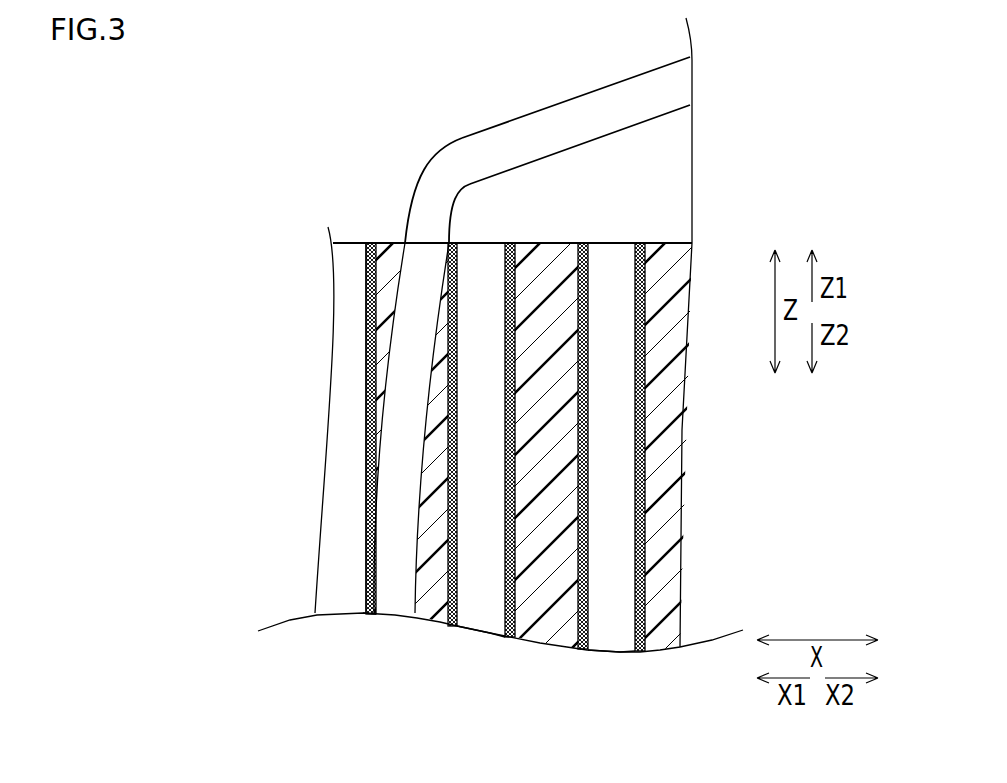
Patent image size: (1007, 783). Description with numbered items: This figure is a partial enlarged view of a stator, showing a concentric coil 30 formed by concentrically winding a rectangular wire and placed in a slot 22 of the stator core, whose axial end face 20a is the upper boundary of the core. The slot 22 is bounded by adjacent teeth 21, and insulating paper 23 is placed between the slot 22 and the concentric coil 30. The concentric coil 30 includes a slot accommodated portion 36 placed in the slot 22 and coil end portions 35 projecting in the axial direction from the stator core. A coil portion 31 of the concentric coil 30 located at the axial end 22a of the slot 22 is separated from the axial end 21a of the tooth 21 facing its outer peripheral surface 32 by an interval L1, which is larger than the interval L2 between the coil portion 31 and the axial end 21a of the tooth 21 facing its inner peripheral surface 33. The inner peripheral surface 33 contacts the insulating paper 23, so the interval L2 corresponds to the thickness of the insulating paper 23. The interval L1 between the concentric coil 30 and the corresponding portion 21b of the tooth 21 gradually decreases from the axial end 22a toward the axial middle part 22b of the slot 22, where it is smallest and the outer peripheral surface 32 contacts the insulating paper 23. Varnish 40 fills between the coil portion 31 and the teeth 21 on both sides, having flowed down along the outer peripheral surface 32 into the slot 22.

The axial end face 20a is at (617, 242).
The tooth 21 is at (487, 630).
The axial end of tooth 21a is at (363, 242).
The corresponding portion of tooth 21b is at (370, 277).
The slot 22 is at (285, 189).
The axial end of slot 22a is at (383, 241).
The axial middle part of slot 22b is at (373, 575).
The insulating paper 23 is at (450, 623).
The concentric coil 30 is at (473, 315).
The coil portion 31 is at (422, 238).
The outer peripheral surface 32 is at (530, 112).
The inner peripheral surface 33 is at (545, 158).
The coil end portion 35 is at (515, 137).
The slot accommodated portion 36 is at (398, 412).
The varnish 40 is at (367, 312).
The interval L1 is at (403, 243).
The interval L2 is at (459, 243).